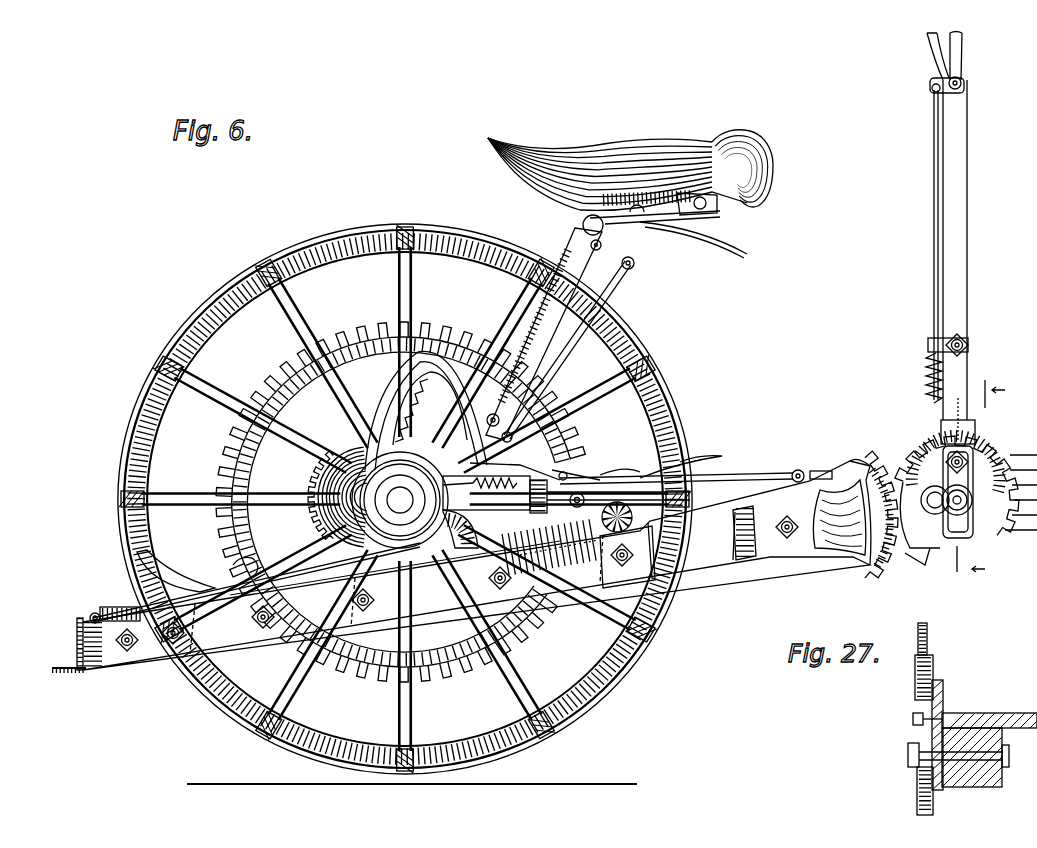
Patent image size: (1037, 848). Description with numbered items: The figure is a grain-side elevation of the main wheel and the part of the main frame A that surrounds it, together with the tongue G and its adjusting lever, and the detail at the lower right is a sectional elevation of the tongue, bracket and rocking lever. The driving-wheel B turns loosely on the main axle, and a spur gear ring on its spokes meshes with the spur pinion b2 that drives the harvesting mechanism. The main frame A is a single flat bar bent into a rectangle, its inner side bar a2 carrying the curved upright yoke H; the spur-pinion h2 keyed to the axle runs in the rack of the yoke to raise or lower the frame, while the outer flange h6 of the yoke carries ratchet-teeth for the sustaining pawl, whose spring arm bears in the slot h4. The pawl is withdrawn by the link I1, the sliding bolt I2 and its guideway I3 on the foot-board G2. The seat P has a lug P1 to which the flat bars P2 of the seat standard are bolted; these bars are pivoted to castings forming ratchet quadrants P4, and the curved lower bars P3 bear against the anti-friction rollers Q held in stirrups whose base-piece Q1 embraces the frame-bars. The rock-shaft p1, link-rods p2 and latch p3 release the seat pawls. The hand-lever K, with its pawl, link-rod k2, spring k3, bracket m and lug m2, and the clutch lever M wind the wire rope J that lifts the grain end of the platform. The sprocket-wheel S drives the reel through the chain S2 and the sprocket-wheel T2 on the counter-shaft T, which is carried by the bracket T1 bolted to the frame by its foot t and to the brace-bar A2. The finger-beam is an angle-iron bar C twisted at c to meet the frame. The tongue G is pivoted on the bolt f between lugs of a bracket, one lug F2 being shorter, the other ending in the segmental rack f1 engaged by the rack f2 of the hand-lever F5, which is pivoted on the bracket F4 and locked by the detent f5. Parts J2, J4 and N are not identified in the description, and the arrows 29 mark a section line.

In FIG. 6, the driving-wheel B is at (478, 250).
In FIG. 6, the spur pinion b2 is at (361, 328).
In FIG. 6, the hub N is at (400, 494).
In FIG. 6, the sprocket-wheel S is at (340, 448).
In FIG. 6, the driving-chain S2 is at (568, 474).
In FIG. 6, the curved upright yoke H is at (458, 356).
In FIG. 6, the slot in yoke h4 is at (458, 412).
In FIG. 6, the ratchet flange h6 is at (380, 402).
In FIG. 6, the spur-pinion h2 is at (620, 461).
In FIG. 6, the seat P is at (598, 150).
In FIG. 6, the downwardly-projecting lug P1 is at (705, 216).
In FIG. 6, the rock-shaft p1 is at (593, 242).
In FIG. 6, the link-rods p2 is at (555, 342).
In FIG. 6, the finger-piece or latch p3 is at (730, 241).
In FIG. 6, the flat bars of seat standard P2 is at (573, 268).
In FIG. 6, the lower standard bars P3 is at (165, 572).
In FIG. 6, the quadrants P4 is at (499, 423).
In FIG. 6, the main frame A is at (476, 568).
In FIG. 6, the inner side bar a2 is at (395, 568).
In FIG. 6, the brace-bar A2 is at (742, 562).
In FIG. 6, the lug of bracket F2 is at (760, 500).
In FIG. 6, the wire rope J is at (90, 615).
In FIG. 6, the bracket J2 is at (105, 608).
In FIG. 6, the bolts J4 is at (313, 609).
In FIG. 6, the angle-iron bar C is at (77, 638).
In FIG. 6, the twist in bar c is at (85, 672).
In FIG. 6, the anti-friction rollers Q is at (234, 566).
In FIG. 6, the base-piece of stirrup Q1 is at (285, 565).
In FIG. 6, the hand-lever K is at (469, 529).
In FIG. 6, the clutch lever M is at (566, 507).
In FIG. 6, the bracket m is at (538, 498).
In FIG. 6, the lug m2 is at (550, 484).
In FIG. 6, the spiral spring k3 is at (515, 471).
In FIG. 6, the link-rod k2 is at (681, 460).
In FIG. 6, the counter-shaft T is at (633, 517).
In FIG. 6, the overhanging sleeve bracket T1 is at (635, 557).
In FIG. 6, the sprocket-wheel T2 is at (559, 549).
In FIG. 6, the foot of bracket t is at (622, 559).
In FIG. 6, the link I1 is at (735, 480).
In FIG. 6, the sliding bolt I2 is at (818, 471).
In FIG. 6, the guideway I3 is at (880, 470).
In FIG. 6, the segmental gear-rack f1 is at (862, 452).
In FIG. 6, the segmental rack of hand-lever f2 is at (915, 548).
In FIG. 27, the segmental rack of hand-lever f2 is at (917, 786).
In FIG. 6, the pivot bolt f is at (787, 539).
In FIG. 6, the sliding detent f5 is at (965, 432).
In FIG. 27, the sliding detent f5 is at (915, 686).
In FIG. 6, the bracket F4 is at (968, 525).
In FIG. 27, the bracket F4 is at (945, 712).
In FIG. 6, the hand-lever F5 is at (968, 333).
In FIG. 27, the hand-lever F5 is at (928, 641).
In FIG. 6, the tongue G is at (1021, 496).
In FIG. 27, the tongue G is at (975, 788).
In FIG. 27, the foot board G2 is at (990, 714).
In FIG. 6, the section line 29 is at (975, 477).